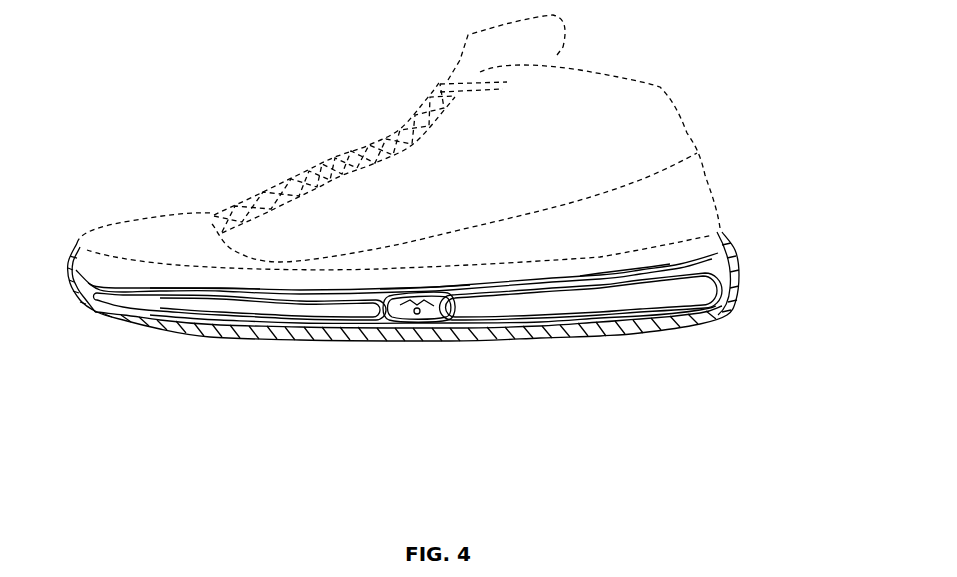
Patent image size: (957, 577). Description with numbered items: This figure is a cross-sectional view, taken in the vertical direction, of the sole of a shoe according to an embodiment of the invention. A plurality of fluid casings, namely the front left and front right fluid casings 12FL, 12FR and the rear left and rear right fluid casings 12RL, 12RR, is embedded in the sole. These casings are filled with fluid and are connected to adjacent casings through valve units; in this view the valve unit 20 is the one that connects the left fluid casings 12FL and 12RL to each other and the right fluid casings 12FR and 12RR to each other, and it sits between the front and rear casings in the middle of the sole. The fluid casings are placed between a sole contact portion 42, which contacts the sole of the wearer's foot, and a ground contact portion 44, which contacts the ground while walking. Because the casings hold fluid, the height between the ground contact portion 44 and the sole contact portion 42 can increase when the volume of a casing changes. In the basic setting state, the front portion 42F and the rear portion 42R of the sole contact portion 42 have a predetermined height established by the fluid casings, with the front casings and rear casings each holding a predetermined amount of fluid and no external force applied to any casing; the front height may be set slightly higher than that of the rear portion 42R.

The front portion of the sole contact portion 42F is at (197, 276).
The sole contact portion 42 is at (426, 278).
The rear portion of the sole contact portion 42R is at (629, 259).
The front left fluid casing 12FL is at (258, 316).
The front right fluid casing 12FR is at (270, 307).
The rear left fluid casing 12RL is at (650, 298).
The rear right fluid casing 12RR is at (581, 296).
The valve unit 20 is at (423, 328).
The ground contact portion 44 is at (580, 337).